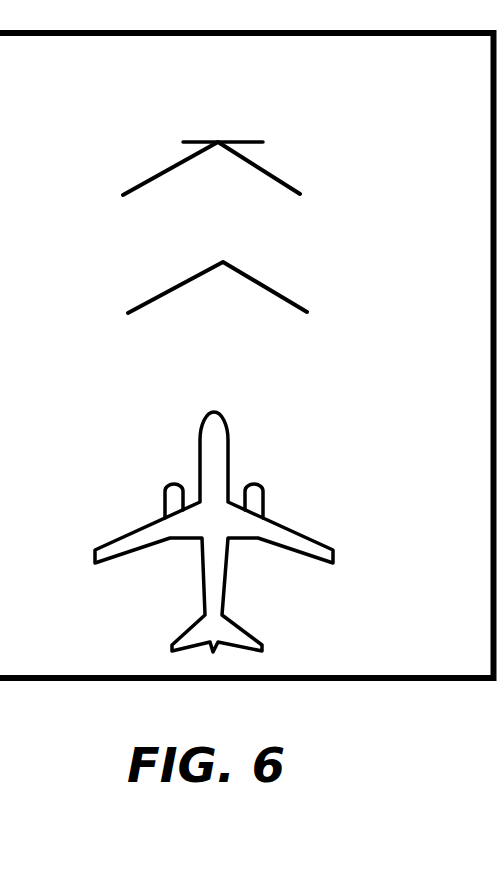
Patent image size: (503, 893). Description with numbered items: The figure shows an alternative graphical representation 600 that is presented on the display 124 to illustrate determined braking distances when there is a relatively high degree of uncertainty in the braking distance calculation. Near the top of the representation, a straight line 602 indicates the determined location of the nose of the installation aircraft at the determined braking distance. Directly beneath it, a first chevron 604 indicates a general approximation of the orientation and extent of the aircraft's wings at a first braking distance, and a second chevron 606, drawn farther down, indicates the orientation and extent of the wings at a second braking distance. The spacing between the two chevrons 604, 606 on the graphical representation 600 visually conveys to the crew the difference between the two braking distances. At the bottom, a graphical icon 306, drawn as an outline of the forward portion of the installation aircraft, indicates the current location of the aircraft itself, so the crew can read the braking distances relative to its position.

The graphical representation 600 is at (427, 703).
The display 124 is at (462, 641).
The straight line 602 is at (247, 141).
The chevron 604 is at (300, 194).
The chevron 606 is at (307, 312).
The graphical icon 306 is at (334, 560).